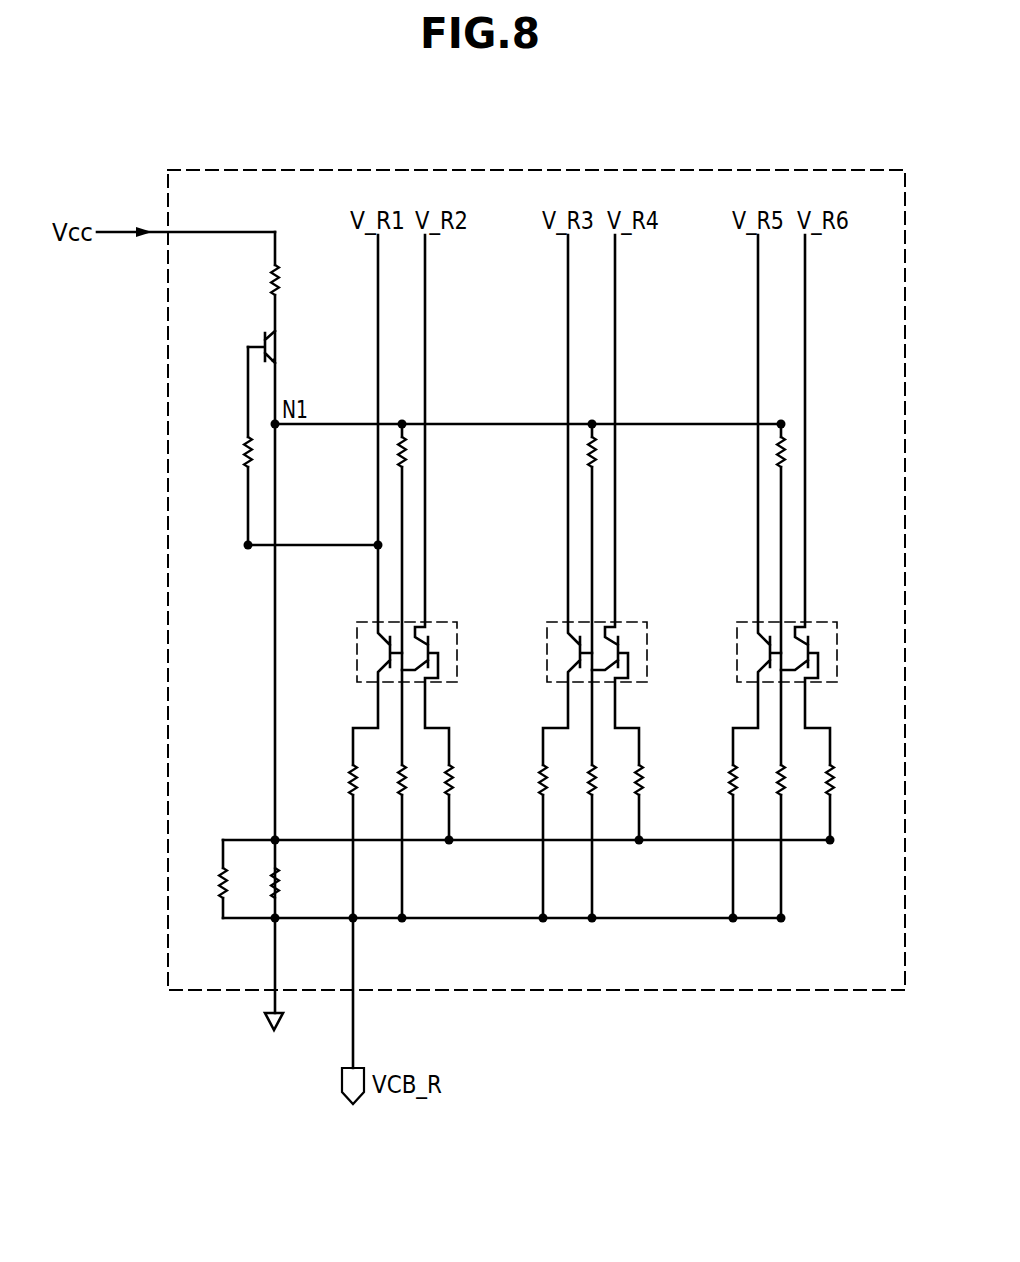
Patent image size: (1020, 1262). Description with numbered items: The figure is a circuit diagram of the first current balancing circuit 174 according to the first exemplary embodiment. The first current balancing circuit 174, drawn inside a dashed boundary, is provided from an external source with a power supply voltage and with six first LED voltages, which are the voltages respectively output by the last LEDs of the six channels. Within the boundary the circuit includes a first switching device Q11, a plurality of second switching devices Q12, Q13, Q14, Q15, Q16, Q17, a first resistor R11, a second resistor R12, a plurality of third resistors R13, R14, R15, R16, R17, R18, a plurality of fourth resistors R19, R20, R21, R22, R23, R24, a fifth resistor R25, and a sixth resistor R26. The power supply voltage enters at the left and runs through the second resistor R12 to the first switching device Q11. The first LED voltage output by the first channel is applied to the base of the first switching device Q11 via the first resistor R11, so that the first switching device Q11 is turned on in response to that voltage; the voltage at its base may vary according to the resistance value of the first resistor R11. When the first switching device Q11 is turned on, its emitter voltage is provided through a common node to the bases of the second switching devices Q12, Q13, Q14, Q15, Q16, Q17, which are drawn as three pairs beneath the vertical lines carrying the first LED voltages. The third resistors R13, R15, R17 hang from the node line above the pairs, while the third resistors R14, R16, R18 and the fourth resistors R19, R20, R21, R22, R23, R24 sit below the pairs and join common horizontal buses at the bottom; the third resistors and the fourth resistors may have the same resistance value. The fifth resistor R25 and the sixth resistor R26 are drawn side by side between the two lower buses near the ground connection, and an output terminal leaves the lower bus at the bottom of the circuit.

The first current balancing circuit 174 is at (546, 168).
The first resistor R11 is at (290, 448).
The second resistor R12 is at (252, 279).
The third resistor R13 is at (369, 594).
The third resistor R14 is at (471, 805).
The third resistor R15 is at (559, 594).
The third resistor R16 is at (662, 805).
The third resistor R17 is at (749, 594).
The third resistor R18 is at (853, 805).
The fourth resistor R19 is at (329, 916).
The fourth resistor R20 is at (382, 844).
The fourth resistor R21 is at (566, 844).
The fourth resistor R22 is at (615, 844).
The fourth resistor R23 is at (756, 844).
The fourth resistor R24 is at (804, 844).
The fifth resistor R25 is at (199, 879).
The sixth resistor R26 is at (301, 882).
The first switching device Q11 is at (286, 349).
The second switching device Q12 is at (356, 500).
The second switching device Q13 is at (452, 500).
The second switching device Q14 is at (548, 500).
The second switching device Q15 is at (641, 500).
The second switching device Q16 is at (734, 500).
The second switching device Q17 is at (831, 500).